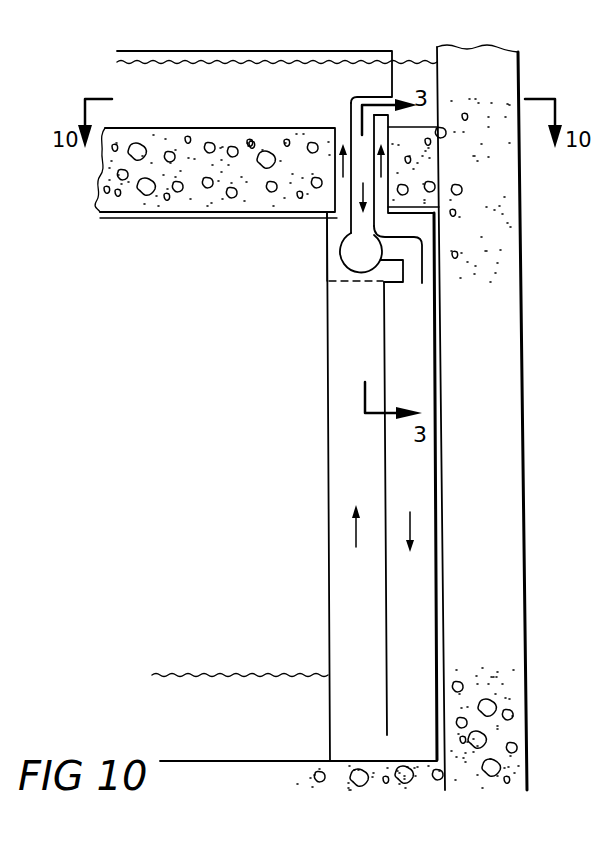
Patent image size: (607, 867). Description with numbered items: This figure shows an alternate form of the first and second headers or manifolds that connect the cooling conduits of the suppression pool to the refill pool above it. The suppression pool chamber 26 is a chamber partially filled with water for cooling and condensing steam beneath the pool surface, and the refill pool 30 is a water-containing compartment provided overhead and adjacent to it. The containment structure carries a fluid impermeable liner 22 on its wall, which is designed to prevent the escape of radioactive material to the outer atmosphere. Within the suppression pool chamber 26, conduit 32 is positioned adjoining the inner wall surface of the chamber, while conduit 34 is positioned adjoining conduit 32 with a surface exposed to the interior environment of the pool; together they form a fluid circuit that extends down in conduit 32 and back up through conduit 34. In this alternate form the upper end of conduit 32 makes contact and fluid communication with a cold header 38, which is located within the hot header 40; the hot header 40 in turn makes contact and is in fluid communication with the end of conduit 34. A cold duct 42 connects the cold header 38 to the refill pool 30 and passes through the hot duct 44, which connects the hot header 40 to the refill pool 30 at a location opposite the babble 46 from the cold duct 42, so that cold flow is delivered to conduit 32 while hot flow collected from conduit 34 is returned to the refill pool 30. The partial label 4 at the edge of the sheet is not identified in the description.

The babble 46 is at (145, 51).
The refill pool 30 is at (410, 80).
The hot duct 44 is at (343, 130).
The cold duct 42 is at (327, 222).
The cold header 38 is at (358, 250).
The hot header 40 is at (332, 270).
The fluid impermeable liner 22 is at (437, 340).
The conduit 32 is at (405, 598).
The conduit 34 is at (355, 643).
The suppression pool chamber 26 is at (127, 570).
The partial numeral 4 is at (7, 328).